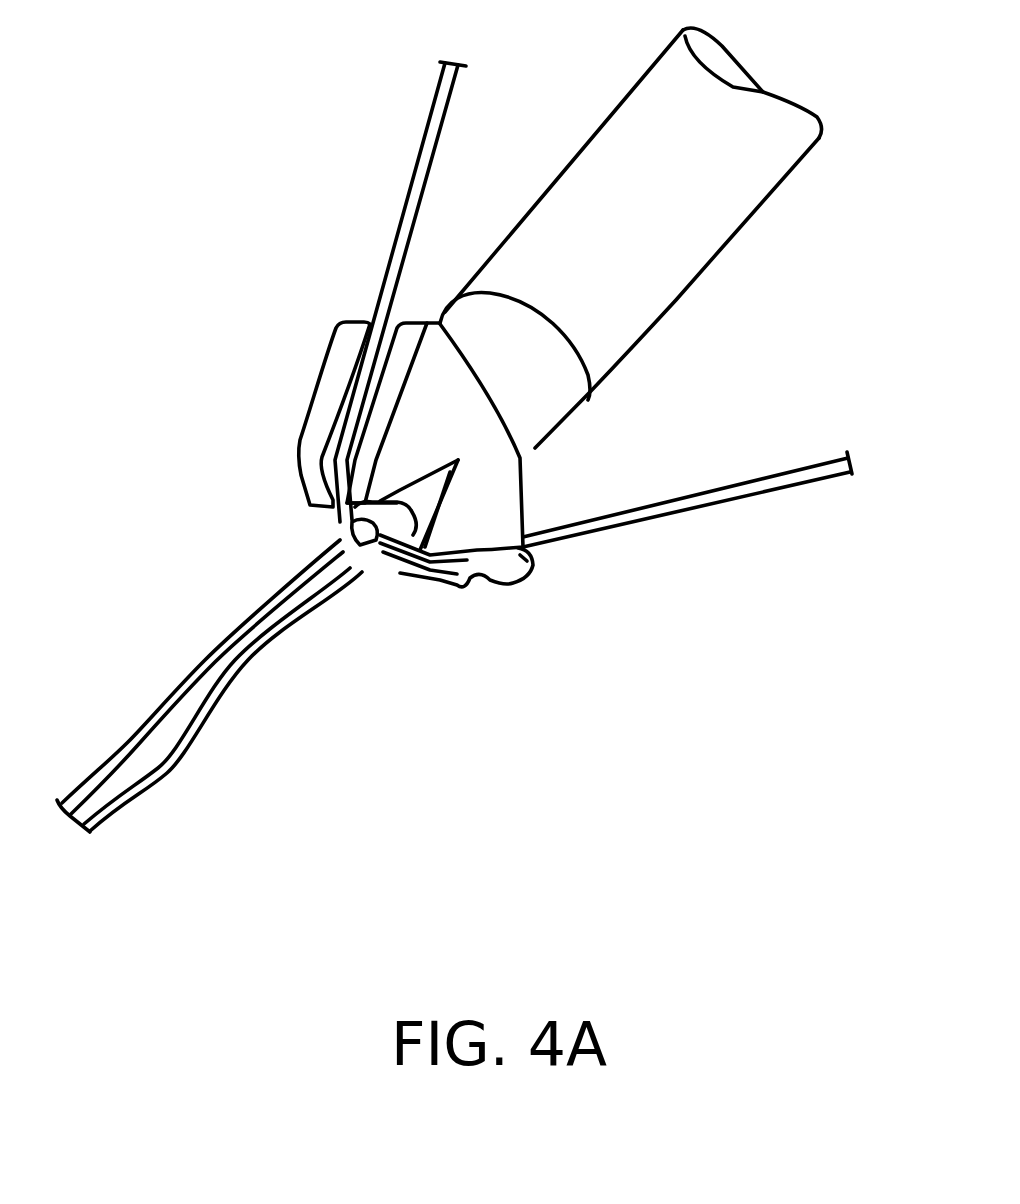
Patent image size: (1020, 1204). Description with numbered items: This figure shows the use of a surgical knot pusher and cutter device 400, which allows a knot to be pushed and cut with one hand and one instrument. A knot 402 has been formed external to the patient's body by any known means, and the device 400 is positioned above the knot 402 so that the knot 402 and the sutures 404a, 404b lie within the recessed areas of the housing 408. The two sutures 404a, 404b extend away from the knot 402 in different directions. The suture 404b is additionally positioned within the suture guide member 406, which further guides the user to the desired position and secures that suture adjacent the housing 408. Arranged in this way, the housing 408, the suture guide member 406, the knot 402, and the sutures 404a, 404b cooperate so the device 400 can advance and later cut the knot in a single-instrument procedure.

The surgical knot pusher and cutter device 400 is at (668, 402).
The knot 402 is at (360, 562).
The suture 404a is at (436, 122).
The suture 404b is at (760, 490).
The suture guide member 406 is at (527, 567).
The housing 408 is at (268, 431).